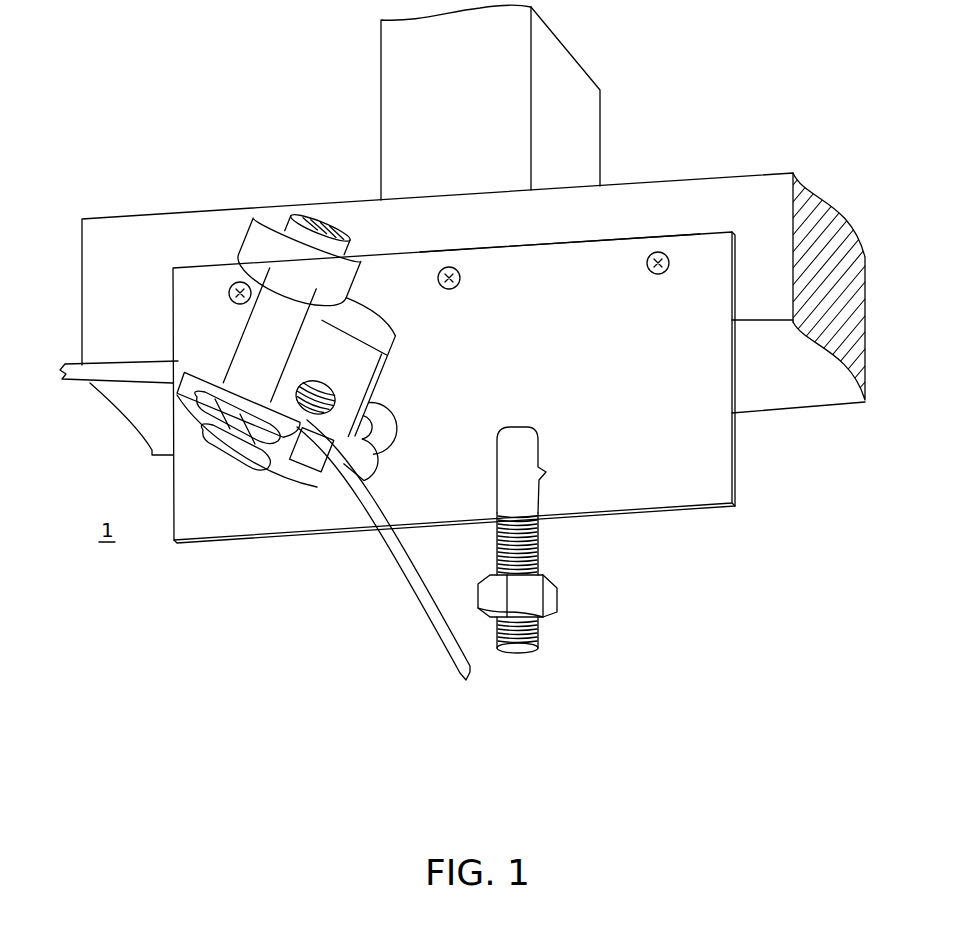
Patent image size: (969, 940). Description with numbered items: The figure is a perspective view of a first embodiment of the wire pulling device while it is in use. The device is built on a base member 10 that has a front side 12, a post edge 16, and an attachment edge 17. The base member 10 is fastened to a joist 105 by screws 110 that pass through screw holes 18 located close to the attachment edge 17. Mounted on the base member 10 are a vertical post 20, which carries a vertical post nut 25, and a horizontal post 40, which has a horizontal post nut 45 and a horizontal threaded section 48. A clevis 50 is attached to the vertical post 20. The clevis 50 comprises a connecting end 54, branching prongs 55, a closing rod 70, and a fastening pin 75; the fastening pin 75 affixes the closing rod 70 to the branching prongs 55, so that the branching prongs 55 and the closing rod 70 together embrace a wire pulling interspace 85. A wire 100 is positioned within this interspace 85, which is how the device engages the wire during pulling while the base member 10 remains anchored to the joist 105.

The base member 10 is at (454, 403).
The front side 12 is at (222, 513).
The post edge 16 is at (637, 508).
The attachment edge 17 is at (551, 245).
The screw holes 18 is at (425, 252).
The vertical post 20 is at (384, 473).
The vertical post nut 25 is at (379, 447).
The horizontal post 40 is at (582, 588).
The horizontal post nut 45 is at (553, 615).
The horizontal threaded section 48 is at (539, 548).
The clevis 50 is at (323, 463).
The connecting end 54 is at (376, 413).
The branching prongs 55 is at (370, 308).
The closing rod 70 is at (258, 332).
The fastening pin 75 is at (205, 398).
The wire pulling interspace 85 is at (303, 365).
The wire 100 is at (432, 598).
The joist 105 is at (798, 396).
The screws 110 is at (236, 283).